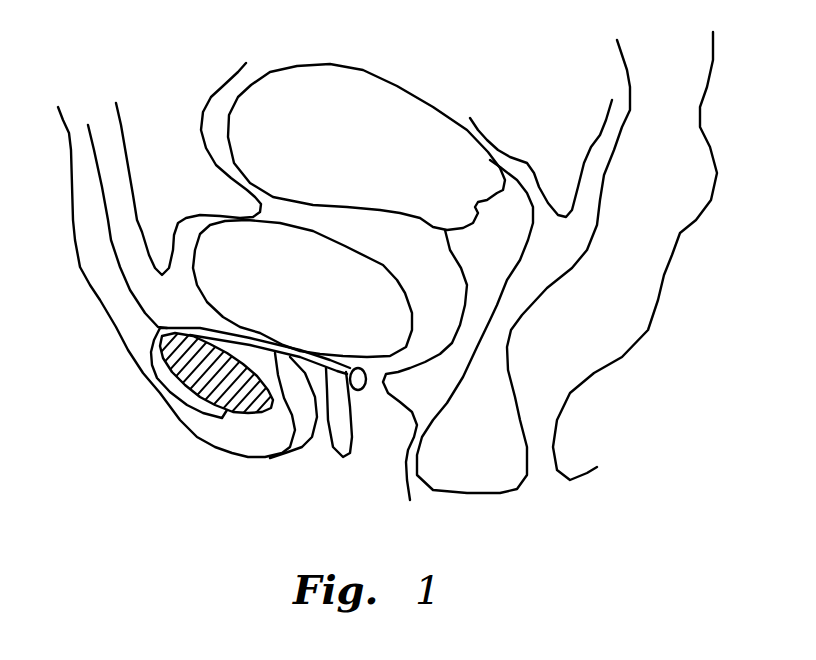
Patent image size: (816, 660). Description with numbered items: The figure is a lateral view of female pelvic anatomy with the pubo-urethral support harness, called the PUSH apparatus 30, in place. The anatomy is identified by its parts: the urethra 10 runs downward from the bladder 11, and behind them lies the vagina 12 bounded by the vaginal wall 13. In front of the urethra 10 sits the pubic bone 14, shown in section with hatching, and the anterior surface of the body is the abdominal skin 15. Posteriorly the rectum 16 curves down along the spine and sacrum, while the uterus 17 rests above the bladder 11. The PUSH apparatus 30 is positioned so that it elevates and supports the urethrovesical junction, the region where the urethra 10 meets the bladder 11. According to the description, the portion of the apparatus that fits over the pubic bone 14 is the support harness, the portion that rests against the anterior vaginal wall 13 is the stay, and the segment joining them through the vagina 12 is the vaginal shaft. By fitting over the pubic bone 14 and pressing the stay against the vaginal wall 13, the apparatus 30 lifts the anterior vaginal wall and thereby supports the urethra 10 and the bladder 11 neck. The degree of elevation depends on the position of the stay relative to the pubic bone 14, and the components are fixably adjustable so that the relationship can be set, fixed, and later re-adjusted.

The urethra 10 is at (330, 444).
The bladder 11 is at (282, 187).
The vagina 12 is at (413, 375).
The vaginal wall 13 is at (517, 296).
The pubic bone 14 is at (217, 373).
The abdominal skin 15 is at (162, 282).
The rectum 16 is at (639, 256).
The uterus 17 is at (366, 140).
The pubo-urethral support harness (PUSH apparatus) 30 is at (263, 436).